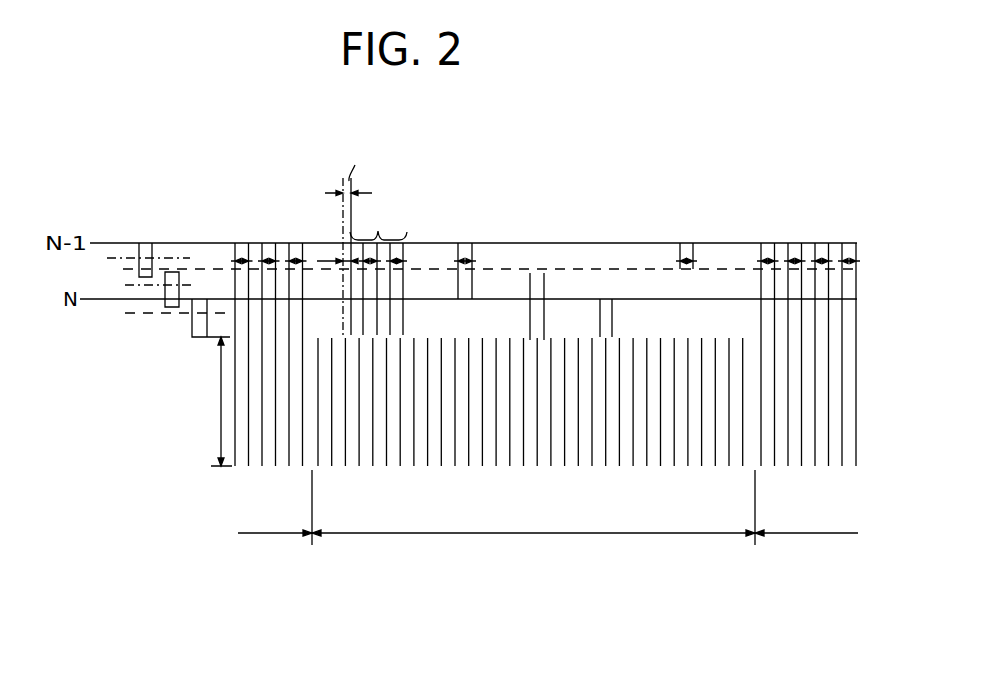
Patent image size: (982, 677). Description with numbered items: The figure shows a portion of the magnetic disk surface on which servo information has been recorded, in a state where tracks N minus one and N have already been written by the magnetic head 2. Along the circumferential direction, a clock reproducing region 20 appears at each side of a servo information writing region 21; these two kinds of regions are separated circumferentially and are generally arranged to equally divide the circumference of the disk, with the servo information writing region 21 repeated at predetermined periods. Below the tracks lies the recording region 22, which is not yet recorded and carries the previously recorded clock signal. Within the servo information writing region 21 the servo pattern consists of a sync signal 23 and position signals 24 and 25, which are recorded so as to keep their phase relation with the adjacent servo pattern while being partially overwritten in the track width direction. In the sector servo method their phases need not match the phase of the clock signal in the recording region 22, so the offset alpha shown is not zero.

The magnetic head 2 is at (143, 244).
The clock reproducing region 20 is at (257, 535).
The servo information writing region 21 is at (508, 533).
The recording region 22 is at (221, 400).
The sync signal 23 is at (362, 237).
The position signal 24 is at (464, 243).
The position signal 25 is at (538, 283).